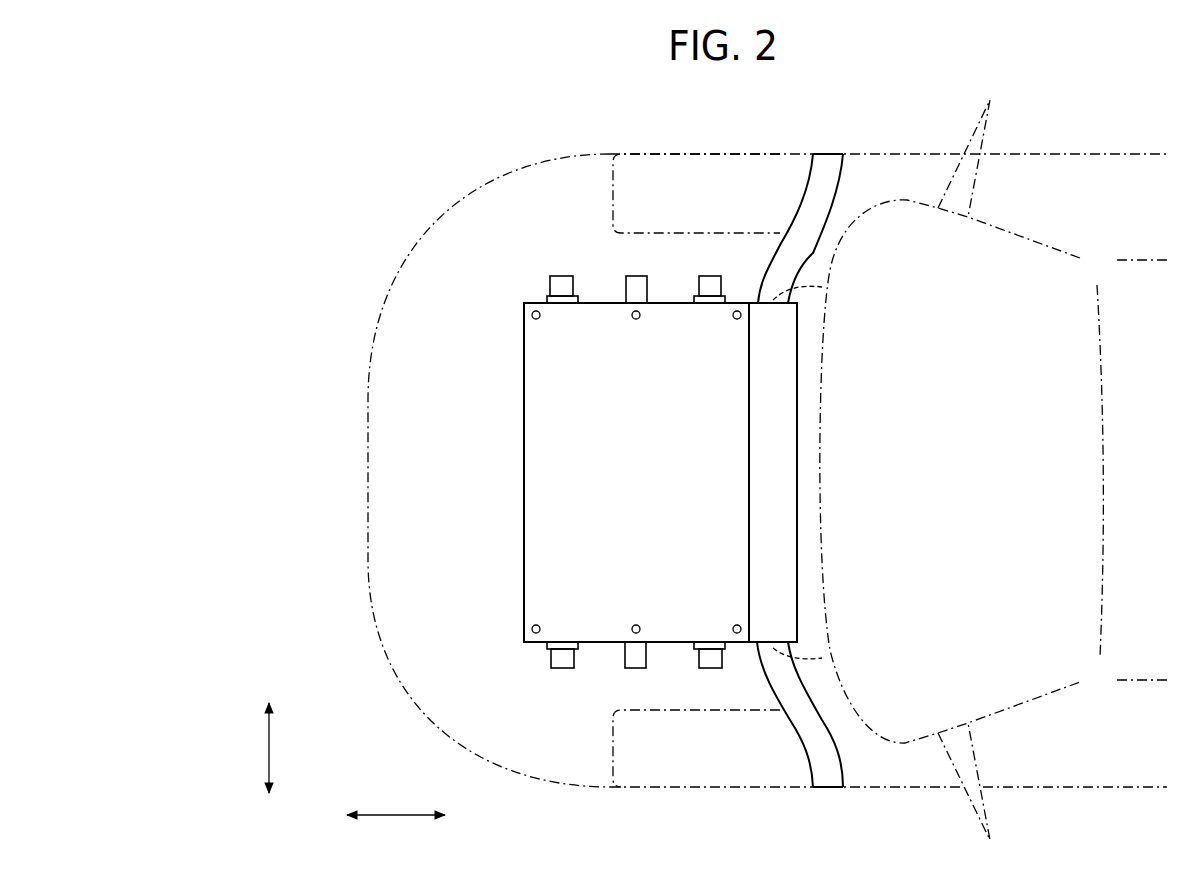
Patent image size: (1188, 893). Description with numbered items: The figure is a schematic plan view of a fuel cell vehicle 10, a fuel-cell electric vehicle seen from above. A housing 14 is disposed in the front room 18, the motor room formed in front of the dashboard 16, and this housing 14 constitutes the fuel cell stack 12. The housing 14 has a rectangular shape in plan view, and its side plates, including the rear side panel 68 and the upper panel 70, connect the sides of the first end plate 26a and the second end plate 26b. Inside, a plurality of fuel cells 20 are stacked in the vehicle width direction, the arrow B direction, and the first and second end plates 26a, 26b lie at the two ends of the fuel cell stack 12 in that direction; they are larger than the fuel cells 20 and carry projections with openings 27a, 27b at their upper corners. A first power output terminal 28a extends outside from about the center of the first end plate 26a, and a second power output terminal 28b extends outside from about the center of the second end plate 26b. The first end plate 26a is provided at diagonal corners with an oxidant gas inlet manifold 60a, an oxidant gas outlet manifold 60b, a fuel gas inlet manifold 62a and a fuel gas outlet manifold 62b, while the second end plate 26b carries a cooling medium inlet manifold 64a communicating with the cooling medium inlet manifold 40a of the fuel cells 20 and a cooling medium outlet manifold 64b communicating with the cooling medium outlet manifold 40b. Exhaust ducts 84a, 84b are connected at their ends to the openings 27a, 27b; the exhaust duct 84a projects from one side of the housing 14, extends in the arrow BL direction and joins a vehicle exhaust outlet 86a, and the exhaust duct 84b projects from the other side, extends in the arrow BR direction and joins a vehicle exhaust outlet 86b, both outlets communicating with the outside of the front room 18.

The fuel cell vehicle 10 is at (817, 86).
The fuel cell stack 12 is at (517, 580).
The housing 14 is at (530, 410).
The dashboard 16 is at (822, 594).
The front room 18 is at (422, 252).
The fuel cell 20 is at (535, 497).
The first end plate 26a is at (608, 647).
The second end plate 26b is at (608, 302).
The opening 27a is at (822, 658).
The opening 27b is at (822, 287).
The first power output terminal 28a is at (640, 652).
The second power output terminal 28b is at (640, 290).
The cooling medium inlet manifold 40a is at (562, 283).
The cooling medium outlet manifold 40b is at (708, 282).
The oxidant gas inlet manifold 60a is at (562, 665).
The oxidant gas outlet manifold 60b is at (706, 665).
The fuel gas inlet manifold 62a is at (706, 665).
The fuel gas outlet manifold 62b is at (562, 665).
The cooling medium inlet manifold 64a is at (562, 283).
The cooling medium outlet manifold 64b is at (708, 282).
The rear side panel 68 is at (783, 470).
The upper panel 70 is at (540, 527).
The exhaust duct 84a is at (797, 693).
The exhaust duct 84b is at (797, 250).
The vehicle exhaust outlet 86a is at (828, 787).
The vehicle exhaust outlet 86b is at (827, 154).